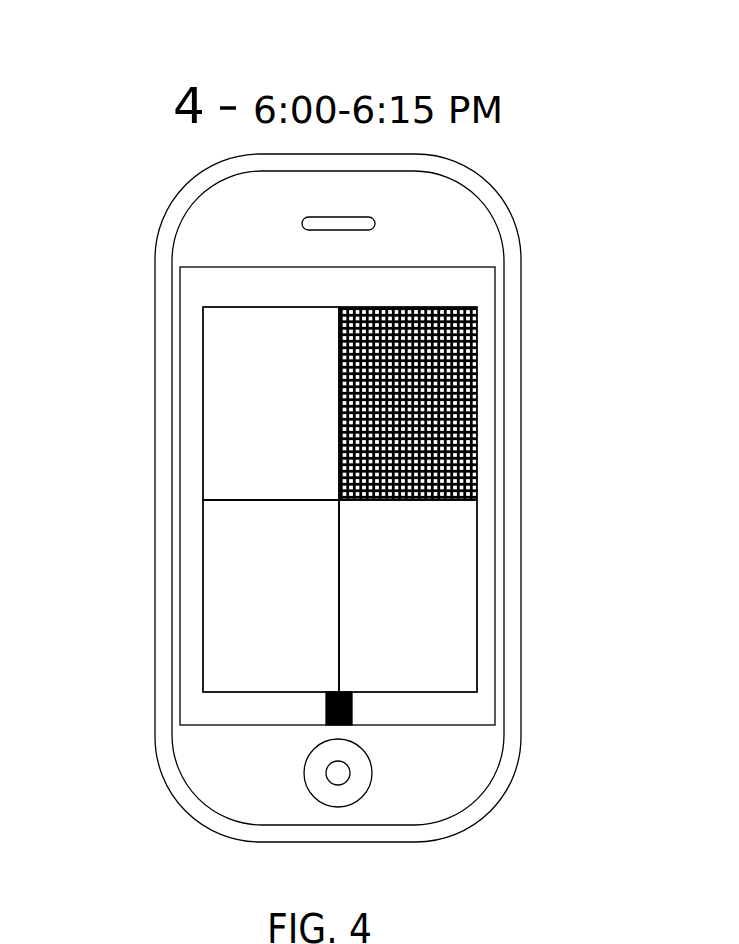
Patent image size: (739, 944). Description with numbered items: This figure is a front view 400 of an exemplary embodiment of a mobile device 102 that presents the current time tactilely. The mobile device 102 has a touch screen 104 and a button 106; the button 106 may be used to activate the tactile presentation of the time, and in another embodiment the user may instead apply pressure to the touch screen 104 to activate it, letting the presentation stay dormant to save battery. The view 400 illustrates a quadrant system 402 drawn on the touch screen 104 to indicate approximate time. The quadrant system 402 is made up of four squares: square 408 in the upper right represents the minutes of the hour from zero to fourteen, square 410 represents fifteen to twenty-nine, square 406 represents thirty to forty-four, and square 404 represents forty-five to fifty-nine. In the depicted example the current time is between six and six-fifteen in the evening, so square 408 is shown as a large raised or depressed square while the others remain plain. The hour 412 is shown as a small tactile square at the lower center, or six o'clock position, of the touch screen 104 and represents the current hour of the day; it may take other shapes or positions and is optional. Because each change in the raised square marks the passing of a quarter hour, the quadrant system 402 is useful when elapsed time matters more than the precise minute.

The front view 400 is at (120, 80).
The mobile device 102 is at (160, 233).
The touch screen 104 is at (215, 292).
The button 106 is at (335, 793).
The quadrant system 402 is at (203, 381).
The square 404 is at (194, 403).
The square 406 is at (230, 587).
The square 408 is at (478, 395).
The square 410 is at (422, 593).
The hour 412 is at (483, 702).